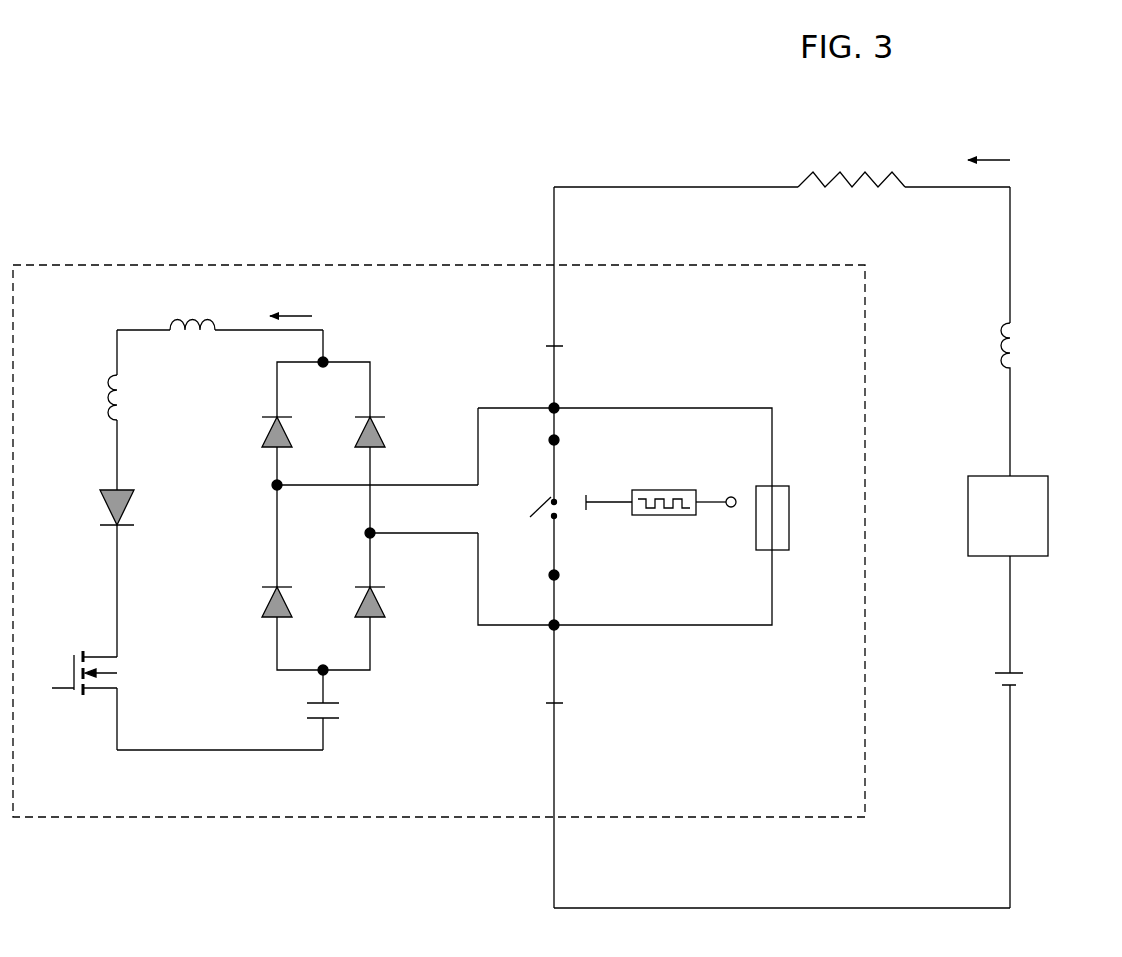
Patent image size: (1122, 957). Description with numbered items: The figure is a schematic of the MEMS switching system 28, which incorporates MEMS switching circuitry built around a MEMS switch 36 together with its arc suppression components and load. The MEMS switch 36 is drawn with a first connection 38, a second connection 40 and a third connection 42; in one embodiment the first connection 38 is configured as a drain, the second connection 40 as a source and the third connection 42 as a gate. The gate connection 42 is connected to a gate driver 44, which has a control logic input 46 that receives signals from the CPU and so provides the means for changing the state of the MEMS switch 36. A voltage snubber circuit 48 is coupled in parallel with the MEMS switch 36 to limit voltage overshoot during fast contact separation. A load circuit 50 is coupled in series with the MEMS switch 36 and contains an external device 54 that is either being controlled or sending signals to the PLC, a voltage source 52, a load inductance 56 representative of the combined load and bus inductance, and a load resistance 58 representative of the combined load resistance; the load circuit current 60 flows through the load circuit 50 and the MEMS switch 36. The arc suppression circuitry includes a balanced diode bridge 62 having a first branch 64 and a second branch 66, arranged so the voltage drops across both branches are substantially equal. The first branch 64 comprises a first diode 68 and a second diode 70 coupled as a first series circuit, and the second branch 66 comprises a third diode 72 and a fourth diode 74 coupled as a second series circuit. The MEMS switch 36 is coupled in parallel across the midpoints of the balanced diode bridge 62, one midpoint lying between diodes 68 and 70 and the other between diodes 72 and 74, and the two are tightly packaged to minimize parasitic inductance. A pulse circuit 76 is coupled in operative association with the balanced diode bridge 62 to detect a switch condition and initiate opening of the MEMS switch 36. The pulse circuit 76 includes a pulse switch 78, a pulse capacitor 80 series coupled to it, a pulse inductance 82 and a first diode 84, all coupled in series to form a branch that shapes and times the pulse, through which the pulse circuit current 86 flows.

The MEMS switching system 28 is at (165, 265).
The MEMS switch 36 is at (522, 514).
The first connection 38 is at (549, 576).
The second connection 40 is at (564, 445).
The third connection 42 is at (600, 500).
The gate driver 44 is at (652, 515).
The control logic input 46 is at (705, 500).
The voltage snubber circuit 48 is at (789, 522).
The load circuit 50 is at (556, 252).
The voltage source 52 is at (1015, 672).
The external device 54 is at (1028, 478).
The load inductance 56 is at (1018, 328).
The load resistance 58 is at (806, 182).
The load circuit current 60 is at (1015, 132).
The balanced diode bridge 62 is at (343, 360).
The first branch 64 is at (276, 535).
The second branch 66 is at (452, 392).
The first diode 68 is at (262, 437).
The second diode 70 is at (262, 605).
The third diode 72 is at (360, 435).
The fourth diode 74 is at (375, 618).
The pulse circuit 76 is at (216, 770).
The pulse switch 78 is at (100, 690).
The pulse capacitor 80 is at (336, 719).
The pulse inductance 82 is at (105, 392).
The first diode D_P 84 is at (105, 500).
The pulse circuit current 86 is at (314, 300).